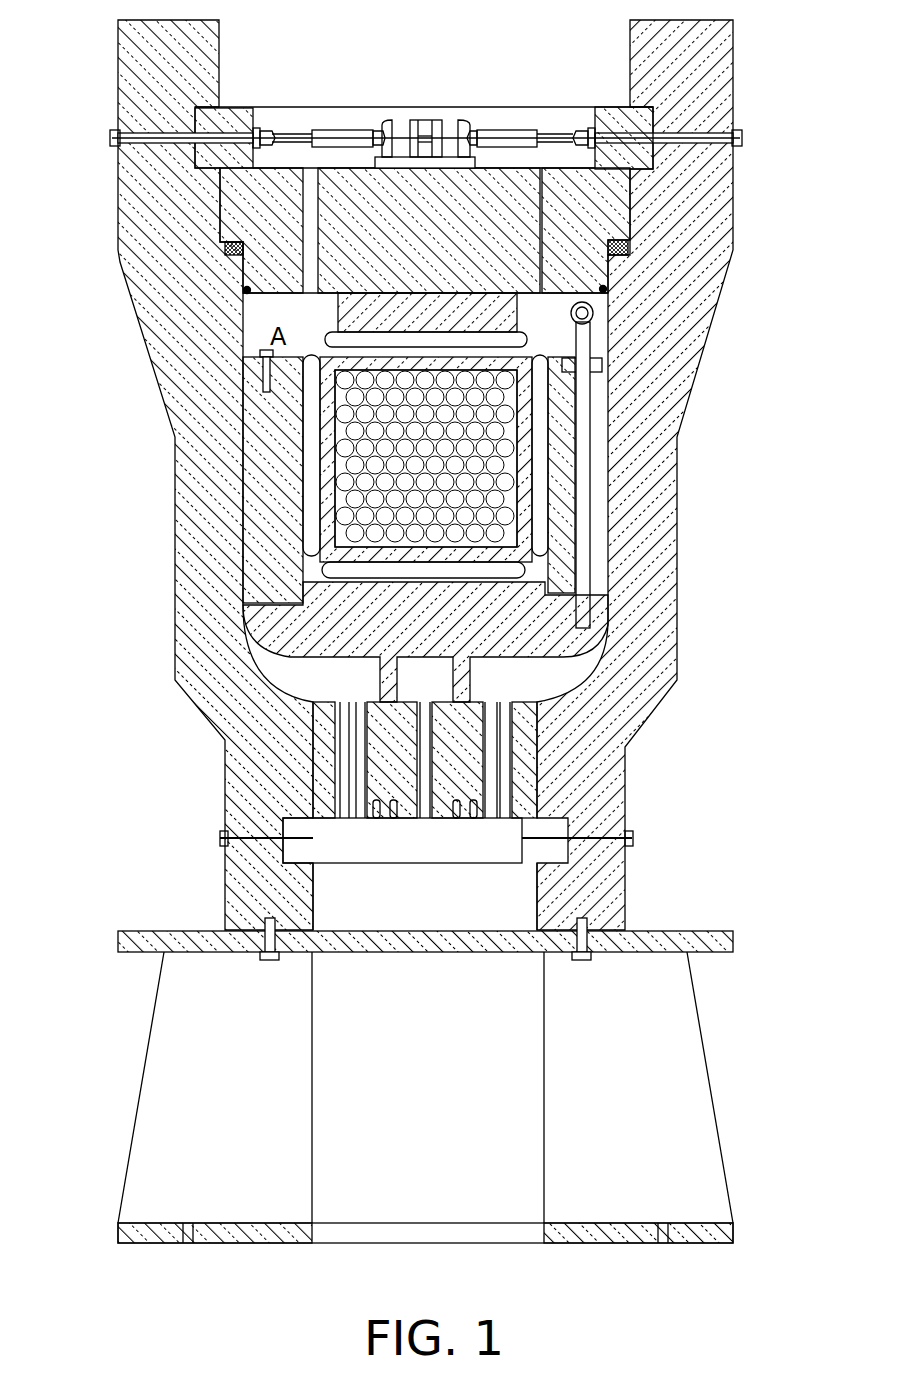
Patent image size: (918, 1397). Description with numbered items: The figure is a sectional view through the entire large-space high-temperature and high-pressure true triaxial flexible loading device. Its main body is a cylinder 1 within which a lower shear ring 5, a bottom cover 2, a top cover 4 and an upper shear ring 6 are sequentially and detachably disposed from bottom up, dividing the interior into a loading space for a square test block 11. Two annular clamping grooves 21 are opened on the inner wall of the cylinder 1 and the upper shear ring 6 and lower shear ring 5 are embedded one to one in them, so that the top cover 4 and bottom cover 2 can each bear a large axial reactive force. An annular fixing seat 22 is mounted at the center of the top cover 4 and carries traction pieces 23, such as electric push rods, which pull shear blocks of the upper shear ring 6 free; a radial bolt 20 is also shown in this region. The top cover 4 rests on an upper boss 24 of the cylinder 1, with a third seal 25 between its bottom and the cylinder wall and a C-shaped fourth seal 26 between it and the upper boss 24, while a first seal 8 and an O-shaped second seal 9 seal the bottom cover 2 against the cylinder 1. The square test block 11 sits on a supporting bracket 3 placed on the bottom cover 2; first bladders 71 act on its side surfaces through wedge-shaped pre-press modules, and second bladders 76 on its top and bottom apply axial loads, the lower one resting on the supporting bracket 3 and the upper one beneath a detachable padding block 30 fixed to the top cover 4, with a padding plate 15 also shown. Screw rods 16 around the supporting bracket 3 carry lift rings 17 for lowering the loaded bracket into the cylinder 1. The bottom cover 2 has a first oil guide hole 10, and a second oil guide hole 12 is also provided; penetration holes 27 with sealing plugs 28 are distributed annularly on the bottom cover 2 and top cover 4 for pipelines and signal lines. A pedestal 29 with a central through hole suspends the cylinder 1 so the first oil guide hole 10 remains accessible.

The cylinder 1 is at (175, 395).
The bottom cover 2 is at (330, 770).
The supporting bracket 3 is at (255, 660).
The top cover 4 is at (215, 205).
The lower shear ring 5 is at (300, 870).
The upper shear ring 6 is at (642, 132).
The first seal 8 is at (540, 812).
The second seal 9 is at (540, 740).
The first oil guide hole 10 is at (432, 822).
The square test block 11 is at (540, 505).
The second oil guide hole 12 is at (312, 168).
The padding plate 15 is at (500, 445).
The screw rod 16 is at (580, 370).
The lift ring 17 is at (592, 325).
The radial bolt 20 is at (742, 138).
The annular clamping groove 21 is at (236, 106).
The fixing seat 22 is at (440, 140).
The traction piece 23 is at (548, 138).
The upper boss 24 is at (640, 245).
The third seal 25 is at (608, 290).
The fourth seal 26 is at (244, 291).
The penetration hole 27 is at (345, 822).
The sealing plug 28 is at (400, 822).
The pedestal 29 is at (692, 1100).
The padding block 30 is at (520, 315).
The first bladder 71 is at (320, 460).
The second bladder 76 is at (300, 595).